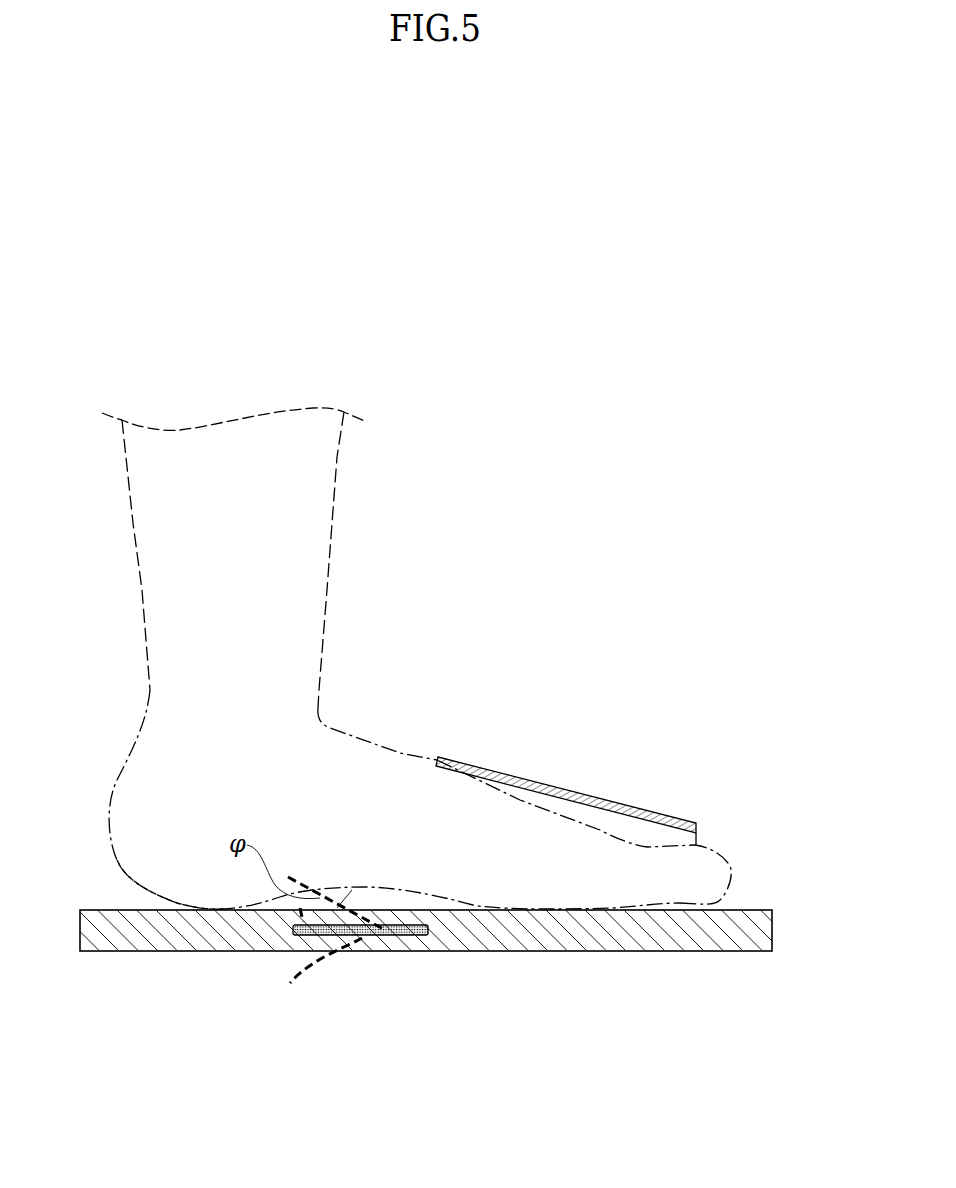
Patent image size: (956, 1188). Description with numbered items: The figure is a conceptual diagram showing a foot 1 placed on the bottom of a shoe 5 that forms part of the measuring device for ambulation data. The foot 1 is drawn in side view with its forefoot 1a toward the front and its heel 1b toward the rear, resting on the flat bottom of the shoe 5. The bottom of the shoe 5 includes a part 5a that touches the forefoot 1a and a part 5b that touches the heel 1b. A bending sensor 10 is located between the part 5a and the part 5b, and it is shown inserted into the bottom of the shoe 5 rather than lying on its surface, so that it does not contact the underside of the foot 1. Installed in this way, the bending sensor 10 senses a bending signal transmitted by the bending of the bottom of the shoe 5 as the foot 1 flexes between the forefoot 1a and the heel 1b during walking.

The foot 1 is at (327, 553).
The forefoot 1a is at (562, 905).
The heel 1b is at (185, 873).
The shoe 5 is at (447, 974).
The part that touches forefoot 5a is at (565, 910).
The part that touches heel 5b is at (207, 910).
The bending sensor 10 is at (428, 933).